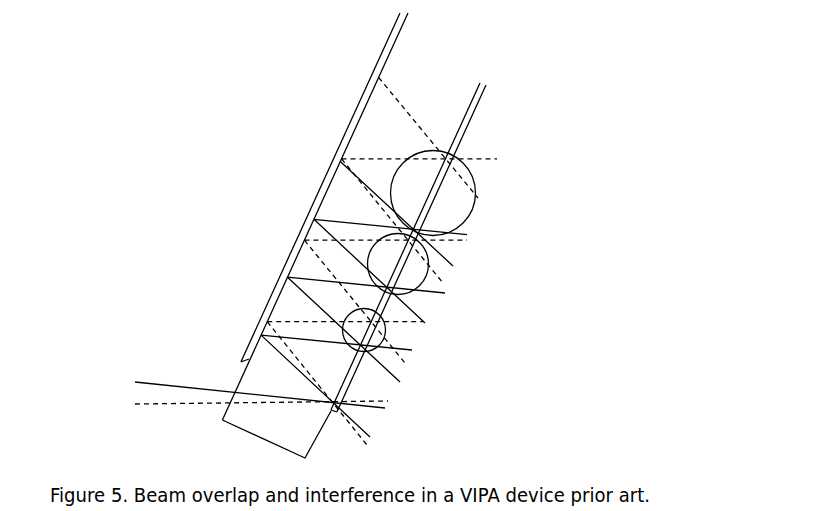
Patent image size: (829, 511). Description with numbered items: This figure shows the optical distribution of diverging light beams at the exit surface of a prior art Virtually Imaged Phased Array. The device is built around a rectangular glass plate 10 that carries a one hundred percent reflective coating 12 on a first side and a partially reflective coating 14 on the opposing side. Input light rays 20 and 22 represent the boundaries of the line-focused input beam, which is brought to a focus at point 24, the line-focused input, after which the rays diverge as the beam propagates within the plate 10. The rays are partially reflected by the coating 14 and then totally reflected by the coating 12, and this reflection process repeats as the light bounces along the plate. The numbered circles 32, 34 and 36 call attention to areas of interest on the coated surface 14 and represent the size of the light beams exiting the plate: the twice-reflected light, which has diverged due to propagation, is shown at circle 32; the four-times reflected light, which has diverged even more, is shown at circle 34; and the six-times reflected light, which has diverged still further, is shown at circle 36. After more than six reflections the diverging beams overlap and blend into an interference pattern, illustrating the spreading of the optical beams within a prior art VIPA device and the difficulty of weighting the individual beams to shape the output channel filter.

The glass plate 10 is at (332, 259).
The reflective coating 12 is at (315, 216).
The partially reflective coating 14 is at (417, 247).
The input light ray 20 is at (249, 411).
The input light ray 22 is at (248, 386).
The focus point 24 is at (319, 411).
The circle 32 is at (384, 347).
The circle 34 is at (427, 280).
The circle 36 is at (473, 211).